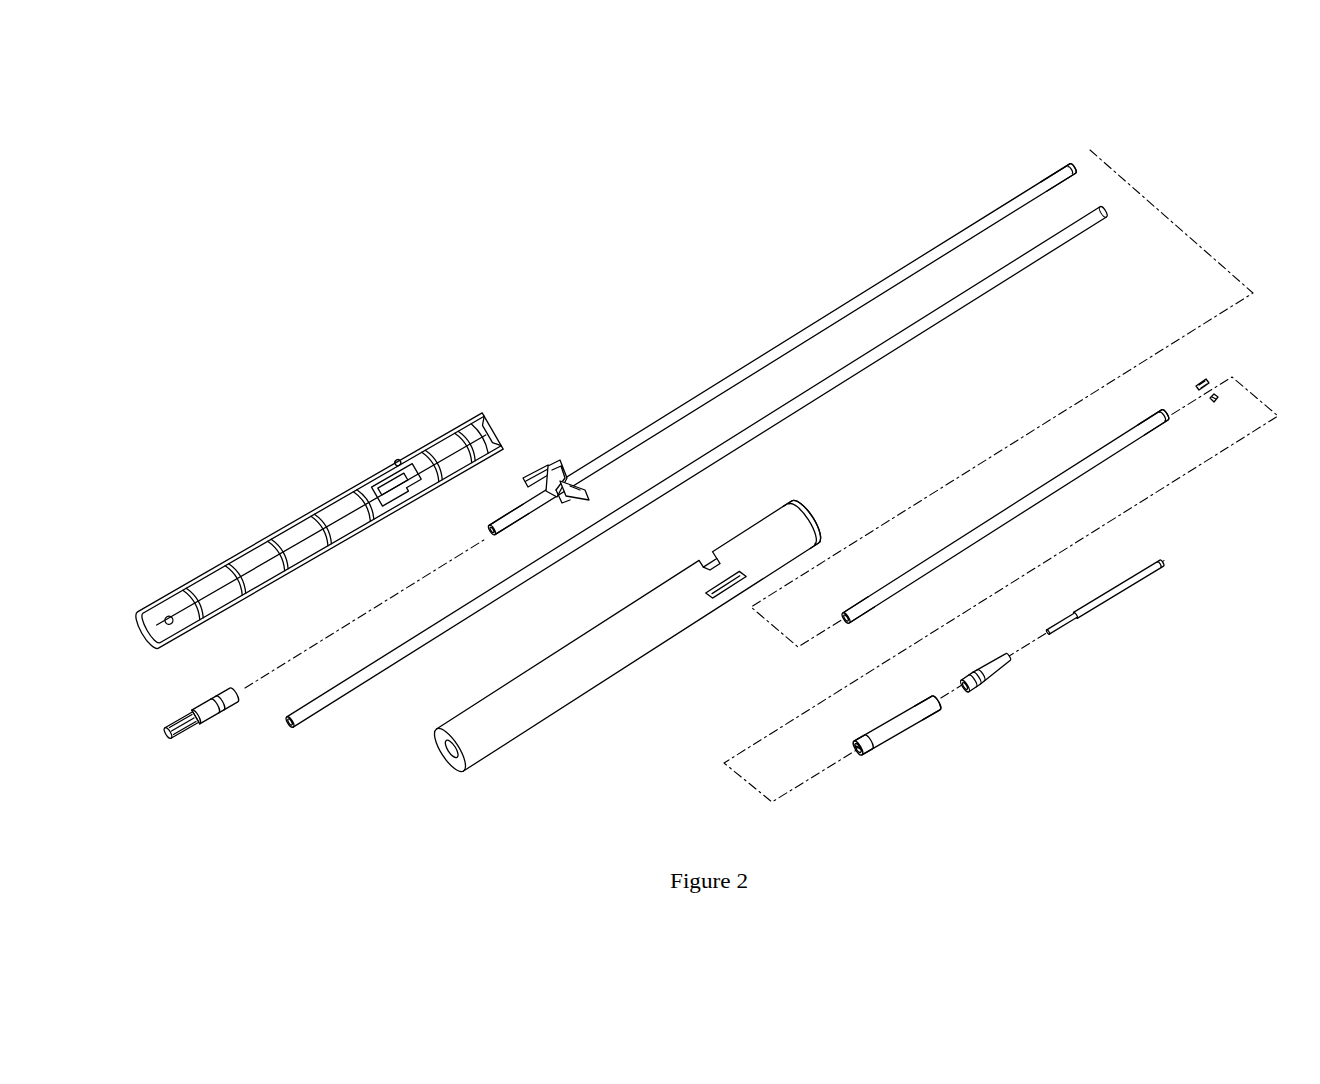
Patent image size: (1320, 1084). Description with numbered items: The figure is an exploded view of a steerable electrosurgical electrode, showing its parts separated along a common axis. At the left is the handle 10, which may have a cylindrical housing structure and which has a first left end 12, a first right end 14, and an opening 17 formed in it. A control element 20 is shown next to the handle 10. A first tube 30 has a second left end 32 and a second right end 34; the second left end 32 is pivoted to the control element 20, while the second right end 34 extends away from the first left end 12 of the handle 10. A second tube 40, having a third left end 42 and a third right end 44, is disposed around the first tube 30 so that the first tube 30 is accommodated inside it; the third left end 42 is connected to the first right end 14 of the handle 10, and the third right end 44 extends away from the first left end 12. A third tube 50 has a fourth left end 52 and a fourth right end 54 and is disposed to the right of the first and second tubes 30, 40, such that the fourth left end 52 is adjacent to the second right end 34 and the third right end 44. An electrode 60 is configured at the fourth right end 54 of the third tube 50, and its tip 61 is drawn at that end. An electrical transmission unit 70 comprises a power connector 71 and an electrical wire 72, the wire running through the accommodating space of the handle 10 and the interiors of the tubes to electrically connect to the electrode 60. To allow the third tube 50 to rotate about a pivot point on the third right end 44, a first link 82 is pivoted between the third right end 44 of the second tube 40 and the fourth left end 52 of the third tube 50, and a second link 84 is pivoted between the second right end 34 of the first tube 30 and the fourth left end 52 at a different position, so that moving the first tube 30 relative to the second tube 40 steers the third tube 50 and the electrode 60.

The handle 10 is at (256, 540).
The first left end 12 is at (670, 633).
The first right end 14 is at (804, 522).
The opening 17 is at (719, 574).
The control element 20 is at (555, 475).
The first tube 30 is at (782, 332).
The second left end 32 is at (508, 520).
The second right end 34 is at (1062, 168).
The second tube 40 is at (1005, 546).
The third left end 42 is at (850, 622).
The third right end 44 is at (1160, 422).
The third tube 50 is at (906, 755).
The fourth left end 52 is at (866, 756).
The fourth right end 54 is at (928, 722).
The electrode 60 is at (1103, 594).
The pin tip 61 is at (1000, 668).
The electrical transmission unit 70 is at (635, 516).
The power connector 71 is at (201, 736).
The electrical wire 72 is at (290, 732).
The first link 82 is at (1215, 402).
The second link 84 is at (1205, 382).